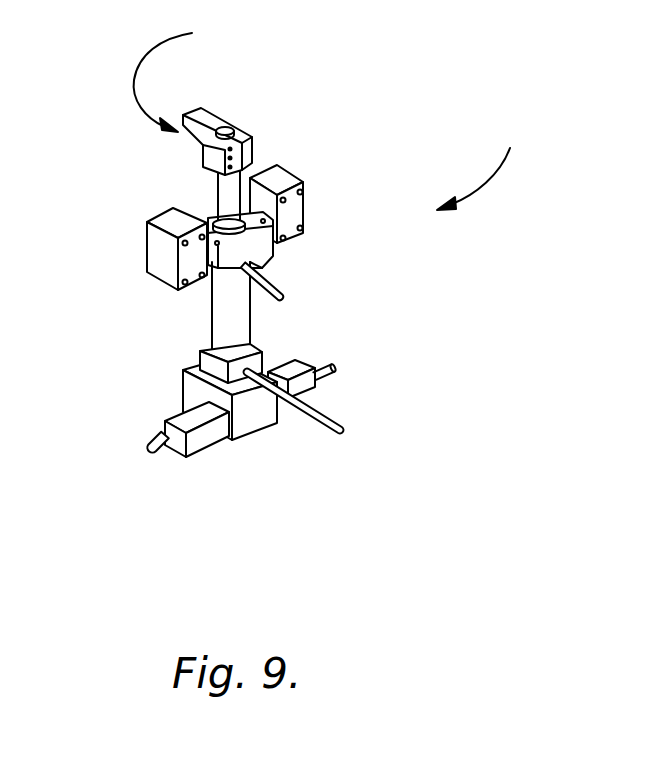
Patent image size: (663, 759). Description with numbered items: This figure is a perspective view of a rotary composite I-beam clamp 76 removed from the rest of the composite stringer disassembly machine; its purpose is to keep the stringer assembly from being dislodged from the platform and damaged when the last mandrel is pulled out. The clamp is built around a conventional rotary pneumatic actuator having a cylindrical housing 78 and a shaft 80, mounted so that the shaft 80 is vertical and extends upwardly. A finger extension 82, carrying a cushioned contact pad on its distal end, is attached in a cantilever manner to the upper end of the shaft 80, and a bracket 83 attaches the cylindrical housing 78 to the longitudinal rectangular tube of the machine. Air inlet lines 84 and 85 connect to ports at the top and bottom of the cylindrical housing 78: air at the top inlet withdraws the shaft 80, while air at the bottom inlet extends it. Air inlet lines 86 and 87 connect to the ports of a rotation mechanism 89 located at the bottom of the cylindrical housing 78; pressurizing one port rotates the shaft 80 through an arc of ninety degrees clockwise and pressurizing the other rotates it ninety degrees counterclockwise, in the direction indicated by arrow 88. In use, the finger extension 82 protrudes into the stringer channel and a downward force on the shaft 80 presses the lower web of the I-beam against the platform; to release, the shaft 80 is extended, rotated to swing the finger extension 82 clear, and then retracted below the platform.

The rotary composite I-beam clamp 76 is at (487, 162).
The cylindrical housing 78 is at (238, 330).
The shaft 80 is at (222, 197).
The finger extension 82 is at (213, 113).
The bracket 83 is at (293, 210).
The air inlet line 84 is at (262, 278).
The air inlet line 85 is at (327, 430).
The air inlet line 86 is at (333, 370).
The air inlet line 87 is at (163, 438).
The arrow 88 is at (133, 69).
The rotation mechanism 89 is at (247, 432).